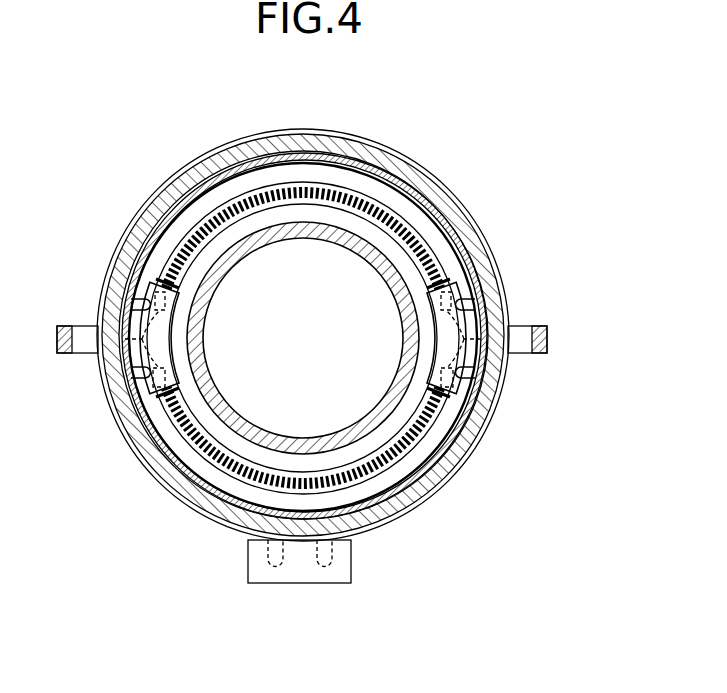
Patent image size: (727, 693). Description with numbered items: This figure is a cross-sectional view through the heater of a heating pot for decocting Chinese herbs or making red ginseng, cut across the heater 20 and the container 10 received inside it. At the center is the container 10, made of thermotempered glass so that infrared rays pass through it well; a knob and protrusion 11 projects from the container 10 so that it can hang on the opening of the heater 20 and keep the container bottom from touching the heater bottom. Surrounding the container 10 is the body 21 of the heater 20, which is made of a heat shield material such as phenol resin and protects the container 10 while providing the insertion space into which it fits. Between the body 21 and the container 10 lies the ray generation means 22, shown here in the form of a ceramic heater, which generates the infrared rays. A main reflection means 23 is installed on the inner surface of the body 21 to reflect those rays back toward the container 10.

The container 10 is at (417, 303).
The knob and protrusion 11 is at (548, 339).
The heater 20 is at (348, 336).
The body 21 is at (500, 383).
The ray generation means 22 is at (423, 253).
The main reflection means 23 is at (495, 422).